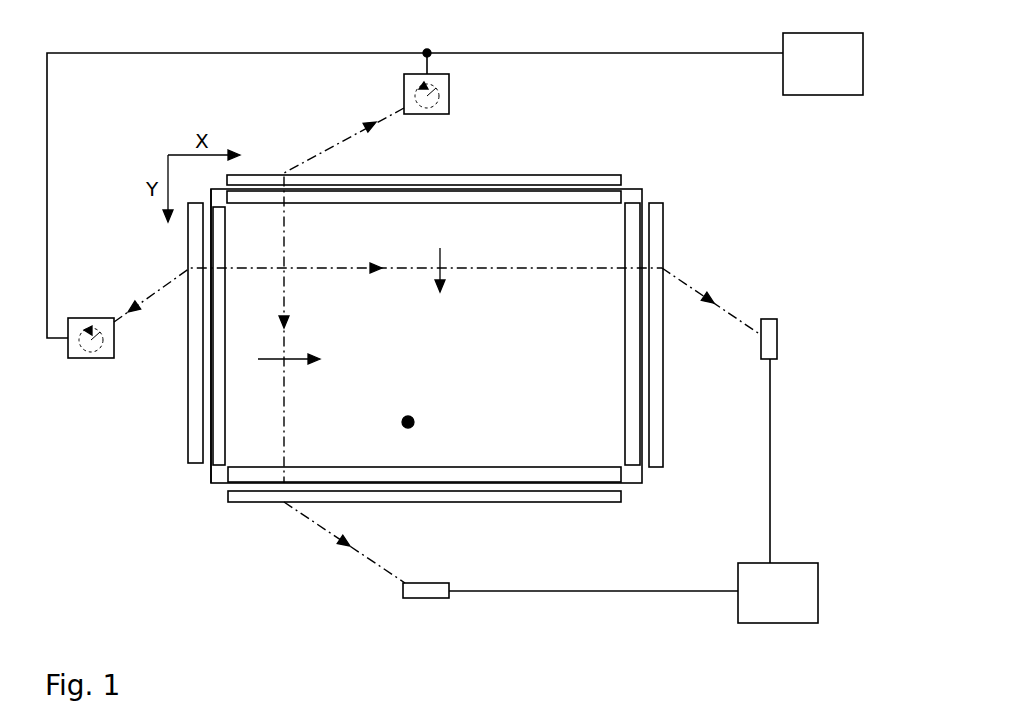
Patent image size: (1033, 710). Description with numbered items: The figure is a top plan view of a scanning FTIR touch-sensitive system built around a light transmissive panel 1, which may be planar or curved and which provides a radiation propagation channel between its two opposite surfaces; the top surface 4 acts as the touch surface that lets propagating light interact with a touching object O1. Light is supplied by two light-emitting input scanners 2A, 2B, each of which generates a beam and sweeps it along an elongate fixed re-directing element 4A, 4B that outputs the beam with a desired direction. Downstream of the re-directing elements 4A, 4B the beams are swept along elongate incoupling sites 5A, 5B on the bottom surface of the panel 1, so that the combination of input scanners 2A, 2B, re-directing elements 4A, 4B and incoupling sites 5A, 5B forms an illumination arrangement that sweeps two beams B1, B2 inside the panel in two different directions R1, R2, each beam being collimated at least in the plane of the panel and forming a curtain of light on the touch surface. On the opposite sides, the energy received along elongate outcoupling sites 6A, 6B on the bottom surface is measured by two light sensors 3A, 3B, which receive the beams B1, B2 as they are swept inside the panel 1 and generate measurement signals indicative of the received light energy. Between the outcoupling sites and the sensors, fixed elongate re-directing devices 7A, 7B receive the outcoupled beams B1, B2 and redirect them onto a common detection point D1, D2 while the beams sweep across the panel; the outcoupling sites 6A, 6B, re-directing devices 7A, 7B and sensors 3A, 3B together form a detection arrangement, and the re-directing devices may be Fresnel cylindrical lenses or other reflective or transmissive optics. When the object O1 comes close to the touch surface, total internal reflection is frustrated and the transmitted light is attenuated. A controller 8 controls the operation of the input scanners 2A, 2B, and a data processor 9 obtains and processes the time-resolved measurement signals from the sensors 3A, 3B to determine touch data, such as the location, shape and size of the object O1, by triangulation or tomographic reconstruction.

The light transmissive panel 1 is at (646, 187).
The light-emitting input scanner 2A is at (450, 92).
The light-emitting input scanner 2B is at (85, 358).
The light sensor 3A is at (428, 598).
The light sensor 3B is at (777, 325).
The top surface 4 is at (263, 447).
The re-directing element 4A is at (472, 176).
The re-directing element 4B is at (200, 440).
The incoupling site 5A is at (569, 195).
The incoupling site 5B is at (213, 388).
The outcoupling site 6A is at (550, 481).
The outcoupling site 6B is at (640, 246).
The re-directing device 7A is at (262, 502).
The re-directing device 7B is at (660, 455).
The controller 8 is at (805, 33).
The data processor 9 is at (770, 624).
The beam B1 is at (284, 405).
The beam B2 is at (328, 266).
The detection point D1 is at (427, 581).
The detection point D2 is at (760, 337).
The touching object O1 is at (411, 418).
The sweep direction R1 is at (295, 372).
The sweep direction R2 is at (457, 275).